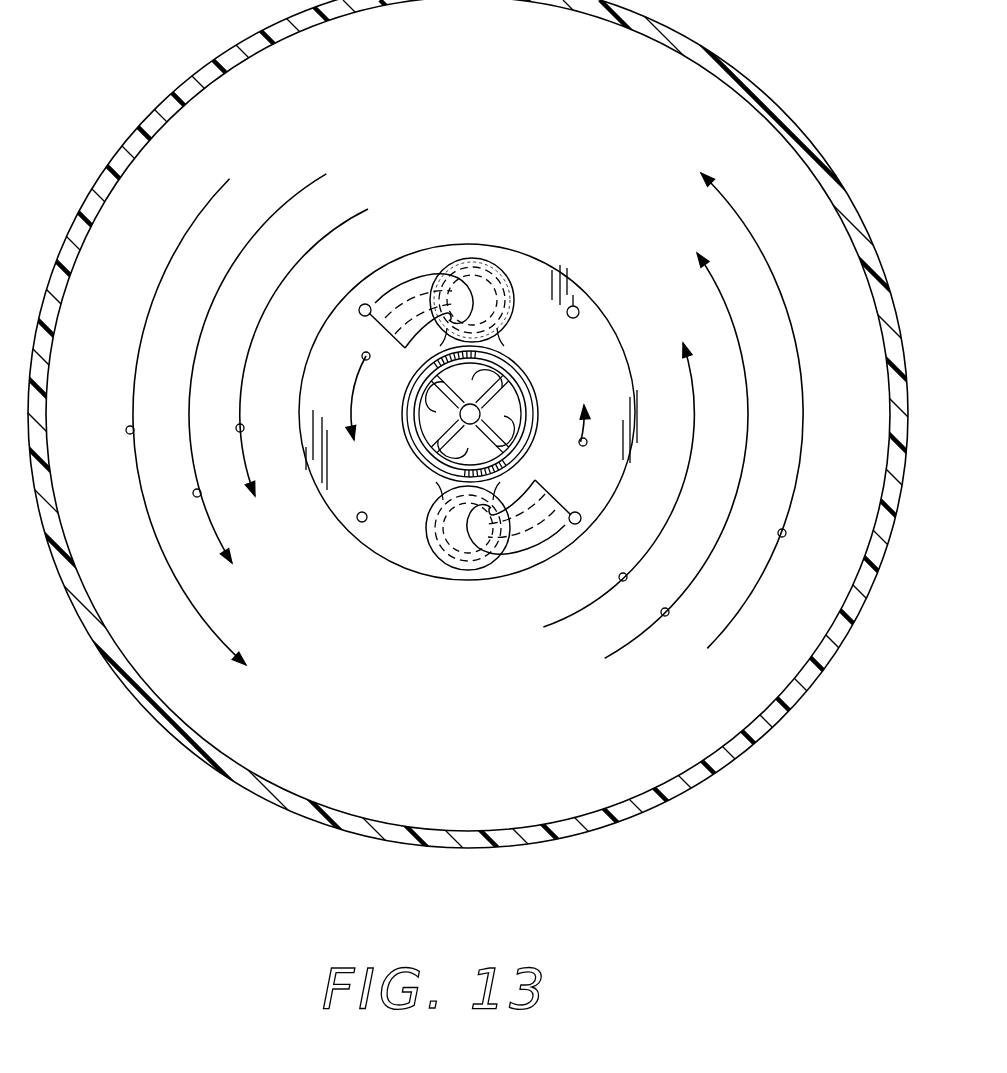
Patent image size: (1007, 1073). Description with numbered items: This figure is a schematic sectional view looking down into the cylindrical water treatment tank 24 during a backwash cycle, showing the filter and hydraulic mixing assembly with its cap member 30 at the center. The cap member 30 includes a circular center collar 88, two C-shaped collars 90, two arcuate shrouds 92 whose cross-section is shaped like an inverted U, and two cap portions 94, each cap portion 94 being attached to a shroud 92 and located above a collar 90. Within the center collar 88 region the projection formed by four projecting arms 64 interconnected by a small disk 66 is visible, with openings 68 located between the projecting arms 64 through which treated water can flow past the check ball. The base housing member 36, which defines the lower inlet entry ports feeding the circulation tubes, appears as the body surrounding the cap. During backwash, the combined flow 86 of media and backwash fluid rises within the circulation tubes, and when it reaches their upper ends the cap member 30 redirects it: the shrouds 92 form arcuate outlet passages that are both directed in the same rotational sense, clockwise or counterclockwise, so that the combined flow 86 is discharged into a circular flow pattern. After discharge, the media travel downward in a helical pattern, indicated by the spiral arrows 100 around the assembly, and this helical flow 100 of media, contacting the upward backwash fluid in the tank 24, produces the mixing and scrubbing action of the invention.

The water treatment tank 24 is at (206, 757).
The cap member 30 is at (518, 278).
The base housing member 36 is at (578, 282).
The projecting arms 64 is at (443, 383).
The small disk 66 is at (458, 421).
The openings 68 is at (433, 410).
The combined flow 86 is at (362, 355).
The circular center collar 88 is at (502, 382).
The C-shaped collars 90 is at (458, 262).
The arcuate shrouds 92 is at (403, 296).
The cap portions 94 is at (486, 283).
The helical flow of media 100 is at (126, 430).